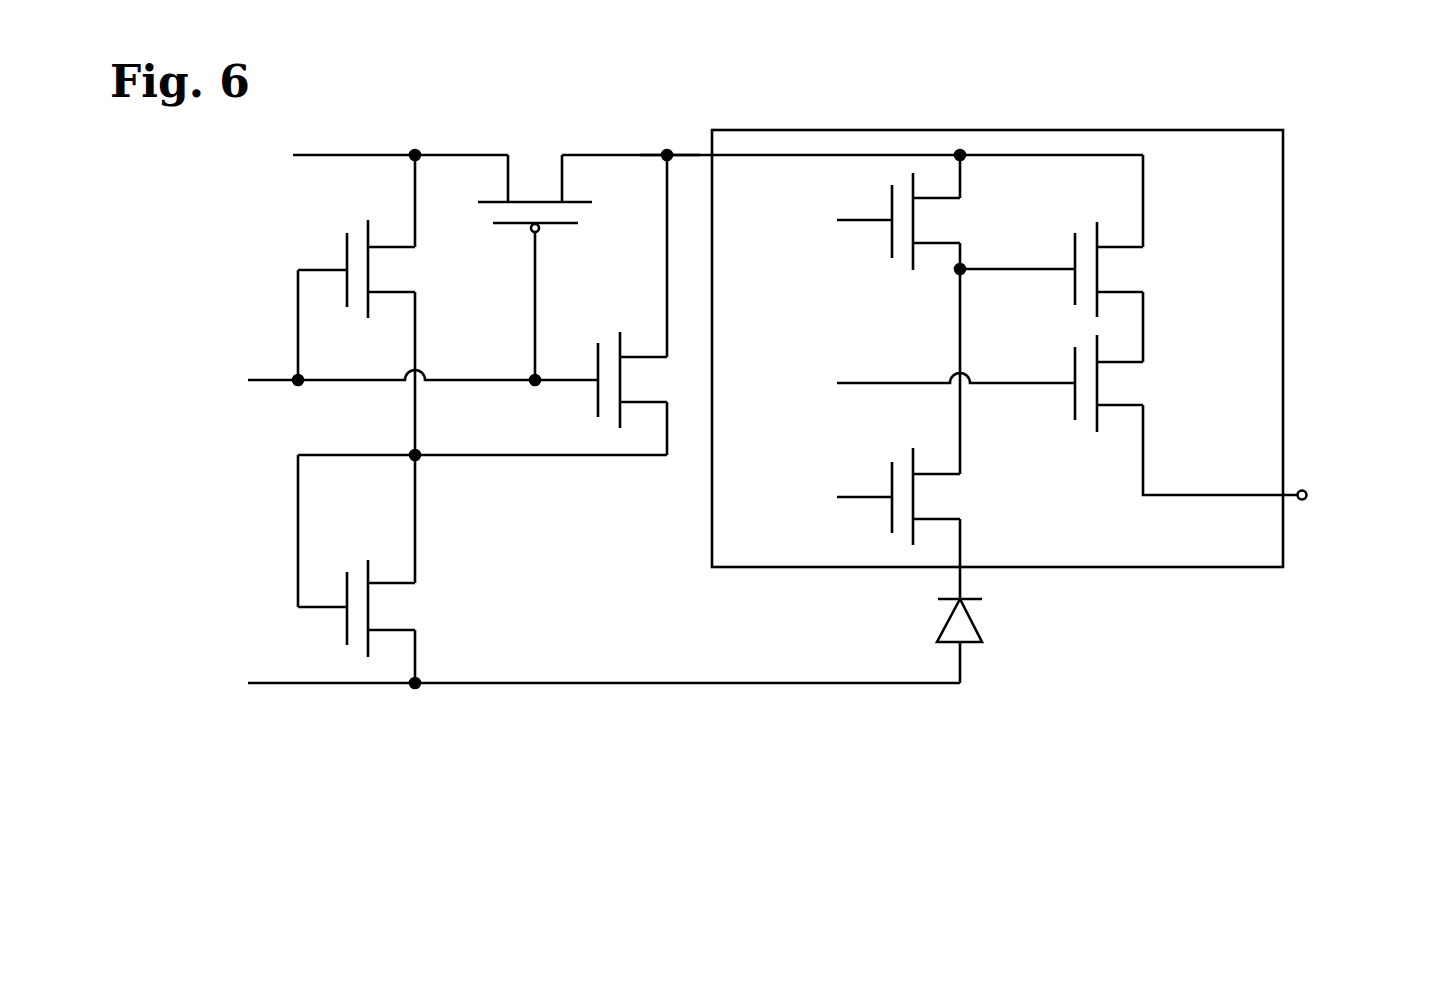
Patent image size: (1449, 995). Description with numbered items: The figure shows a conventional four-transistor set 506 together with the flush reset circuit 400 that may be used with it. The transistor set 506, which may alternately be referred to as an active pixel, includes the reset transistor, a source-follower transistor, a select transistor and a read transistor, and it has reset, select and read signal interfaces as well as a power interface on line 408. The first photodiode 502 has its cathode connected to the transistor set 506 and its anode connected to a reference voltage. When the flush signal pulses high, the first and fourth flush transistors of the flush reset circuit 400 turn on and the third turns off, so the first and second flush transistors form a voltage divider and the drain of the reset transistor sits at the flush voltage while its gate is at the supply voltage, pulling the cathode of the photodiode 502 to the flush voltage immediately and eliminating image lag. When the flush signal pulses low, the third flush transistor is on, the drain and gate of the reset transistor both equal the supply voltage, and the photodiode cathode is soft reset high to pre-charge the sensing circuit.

The pixel circuit 400 is at (327, 124).
The power interface line 408 is at (687, 154).
The first photodiode 502 is at (1002, 616).
The first transistor set 506 is at (933, 130).